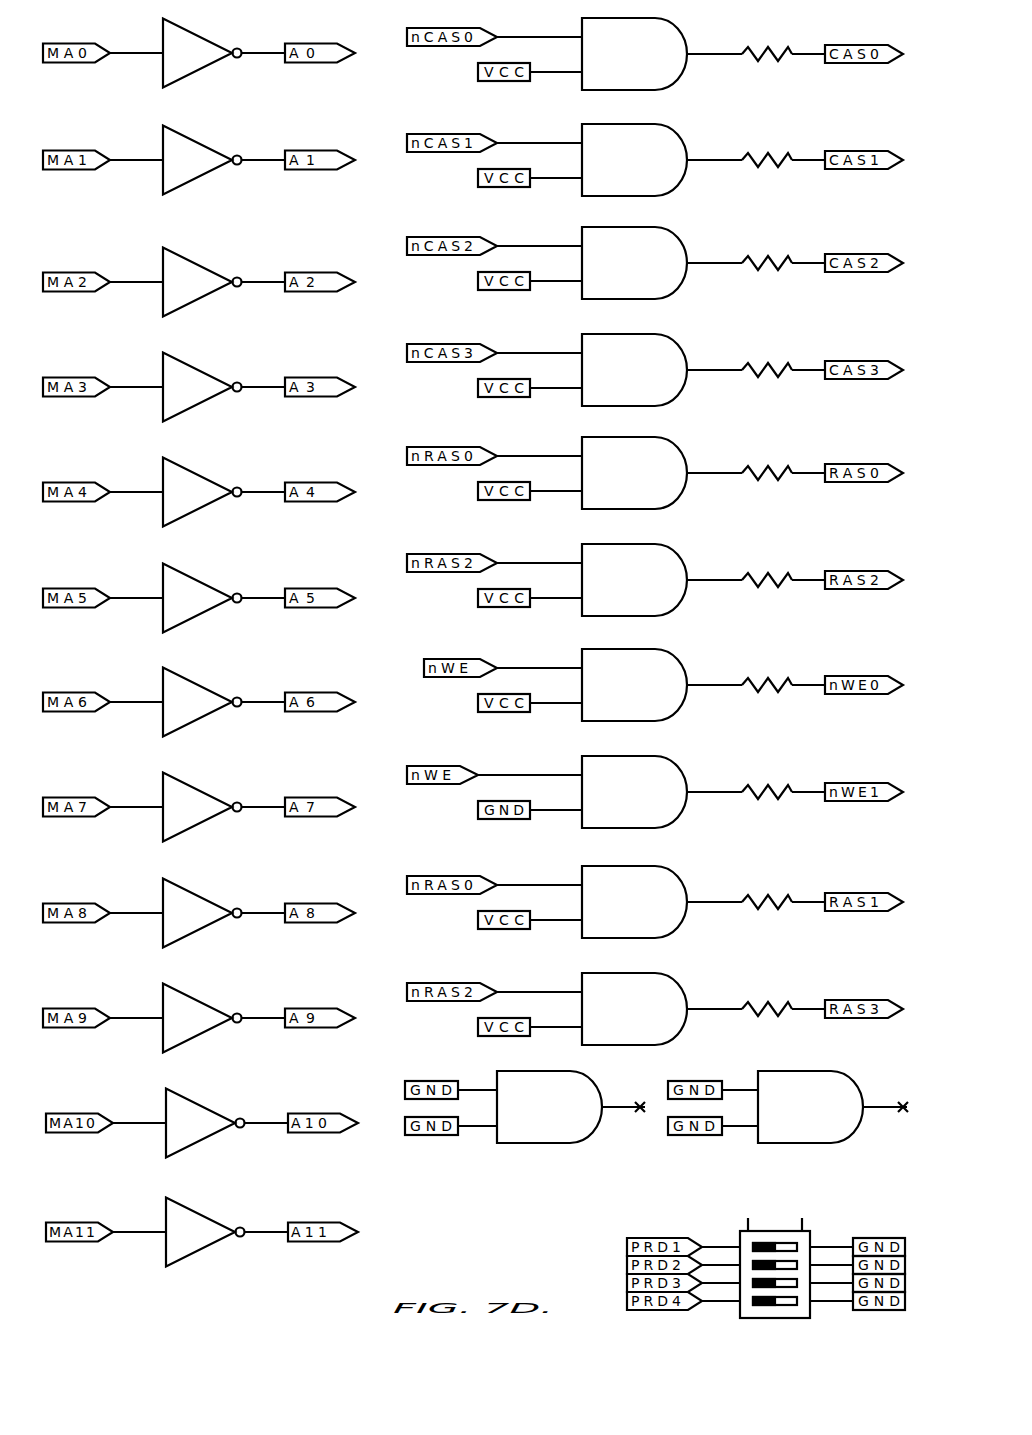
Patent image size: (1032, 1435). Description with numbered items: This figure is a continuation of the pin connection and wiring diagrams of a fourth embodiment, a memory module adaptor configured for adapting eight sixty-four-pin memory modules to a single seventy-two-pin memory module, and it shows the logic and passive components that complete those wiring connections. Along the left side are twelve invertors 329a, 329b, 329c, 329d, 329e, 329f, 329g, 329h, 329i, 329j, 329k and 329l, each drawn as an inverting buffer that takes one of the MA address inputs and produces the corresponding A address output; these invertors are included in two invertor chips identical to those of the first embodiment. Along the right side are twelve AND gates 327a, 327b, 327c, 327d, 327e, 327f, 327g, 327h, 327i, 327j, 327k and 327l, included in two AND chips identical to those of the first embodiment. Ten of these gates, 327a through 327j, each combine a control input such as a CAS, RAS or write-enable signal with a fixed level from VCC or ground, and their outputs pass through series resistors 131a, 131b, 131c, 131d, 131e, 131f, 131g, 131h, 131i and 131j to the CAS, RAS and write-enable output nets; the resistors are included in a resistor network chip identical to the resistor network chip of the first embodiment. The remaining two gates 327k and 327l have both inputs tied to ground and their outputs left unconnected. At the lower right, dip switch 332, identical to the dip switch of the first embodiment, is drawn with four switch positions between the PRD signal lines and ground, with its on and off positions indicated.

The invertor 329a is at (195, 50).
The invertor 329b is at (185, 142).
The invertor 329c is at (192, 260).
The invertor 329d is at (194, 365).
The invertor 329e is at (192, 483).
The invertor 329f is at (202, 582).
The invertor 329g is at (185, 685).
The invertor 329h is at (194, 793).
The invertor 329i is at (202, 892).
The invertor 329j is at (185, 995).
The invertor 329k is at (197, 1102).
The invertor 329l is at (192, 1220).
The AND gate 327a is at (667, 40).
The AND gate 327b is at (667, 146).
The AND gate 327c is at (667, 249).
The AND gate 327d is at (665, 353).
The AND gate 327e is at (667, 459).
The AND gate 327f is at (667, 566).
The AND gate 327g is at (667, 671).
The AND gate 327h is at (667, 778).
The AND gate 327i is at (667, 888).
The AND gate 327j is at (667, 995).
The AND gate 327k is at (572, 1137).
The AND gate 327l is at (790, 1082).
The resistor 131a is at (783, 50).
The resistor 131b is at (783, 156).
The resistor 131c is at (783, 259).
The resistor 131d is at (783, 366).
The resistor 131e is at (783, 469).
The resistor 131f is at (783, 576).
The resistor 131g is at (783, 681).
The resistor 131h is at (783, 788).
The resistor 131i is at (783, 898).
The resistor 131j is at (783, 1005).
The dip switch 332 is at (745, 1310).